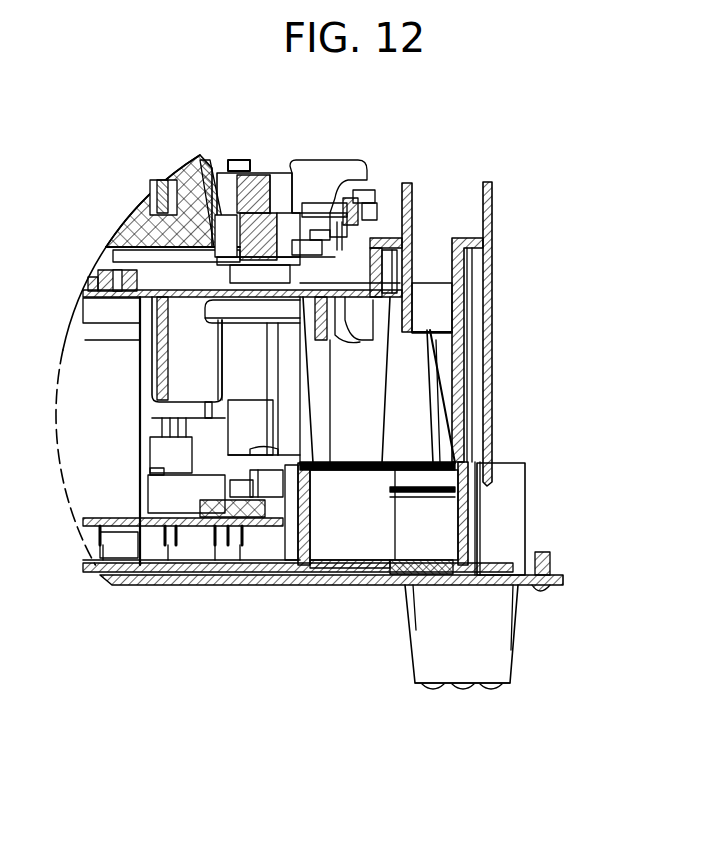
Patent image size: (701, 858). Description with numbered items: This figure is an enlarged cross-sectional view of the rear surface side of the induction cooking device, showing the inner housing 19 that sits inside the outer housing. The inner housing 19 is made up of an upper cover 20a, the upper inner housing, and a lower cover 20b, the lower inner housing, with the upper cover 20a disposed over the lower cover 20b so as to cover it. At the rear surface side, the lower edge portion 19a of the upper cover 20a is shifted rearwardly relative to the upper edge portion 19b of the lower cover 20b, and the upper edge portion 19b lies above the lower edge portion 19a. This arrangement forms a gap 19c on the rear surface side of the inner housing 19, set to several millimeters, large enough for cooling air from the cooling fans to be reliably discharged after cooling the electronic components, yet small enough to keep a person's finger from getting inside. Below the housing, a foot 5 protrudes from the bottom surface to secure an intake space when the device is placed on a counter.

The foot 5 is at (495, 650).
The inner housing 19 is at (490, 208).
The lower edge portion 19a is at (480, 492).
The upper edge portion 19b is at (463, 461).
The gap 19c is at (488, 505).
The upper cover 20a is at (494, 288).
The lower cover 20b is at (470, 532).